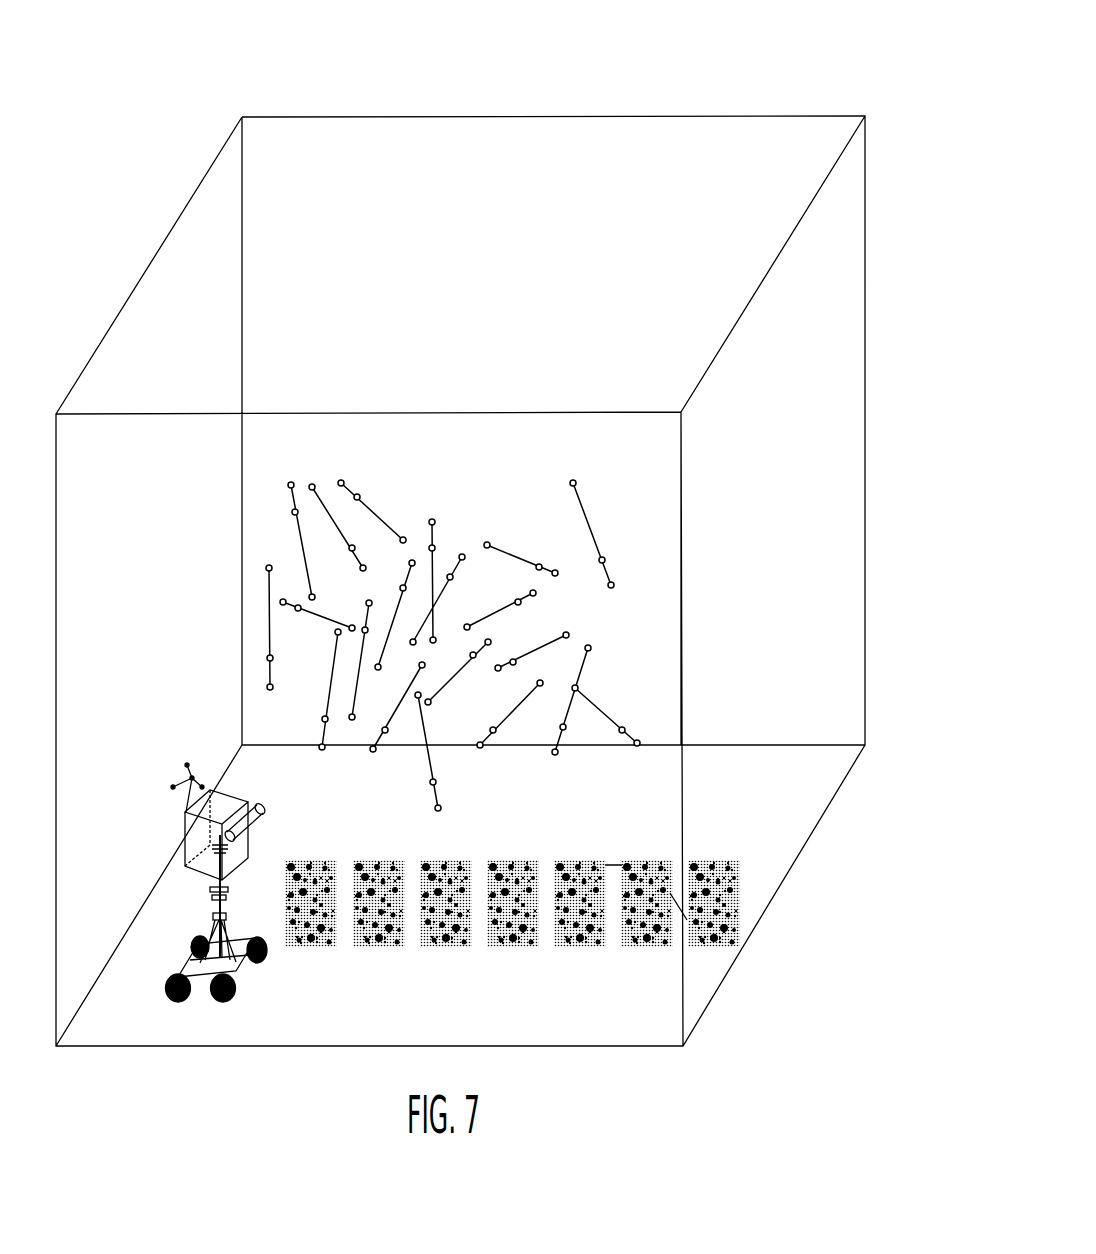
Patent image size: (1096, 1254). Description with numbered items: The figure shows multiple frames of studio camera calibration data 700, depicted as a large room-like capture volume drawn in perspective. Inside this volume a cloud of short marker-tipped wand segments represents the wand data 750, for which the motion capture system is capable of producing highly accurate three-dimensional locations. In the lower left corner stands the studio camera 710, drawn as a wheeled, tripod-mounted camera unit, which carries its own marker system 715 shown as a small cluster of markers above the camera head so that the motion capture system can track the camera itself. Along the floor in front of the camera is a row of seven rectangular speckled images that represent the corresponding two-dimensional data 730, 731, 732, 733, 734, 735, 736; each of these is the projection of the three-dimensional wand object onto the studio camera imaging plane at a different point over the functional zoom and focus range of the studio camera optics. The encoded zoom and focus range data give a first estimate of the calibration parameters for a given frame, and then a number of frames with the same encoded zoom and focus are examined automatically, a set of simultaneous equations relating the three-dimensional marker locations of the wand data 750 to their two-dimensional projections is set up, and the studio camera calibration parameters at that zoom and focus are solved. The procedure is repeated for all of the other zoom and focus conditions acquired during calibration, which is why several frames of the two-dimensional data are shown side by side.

The studio camera calibration data 700 is at (418, 92).
The studio camera 710 is at (187, 867).
The marker system 715 is at (195, 757).
The 2D data 730 is at (310, 949).
The 2D data 731 is at (380, 949).
The 2D data 732 is at (452, 949).
The 2D data 733 is at (518, 949).
The 2D data 734 is at (586, 949).
The 2D data 735 is at (650, 949).
The 2D data 736 is at (741, 880).
The wand data 750 is at (598, 518).